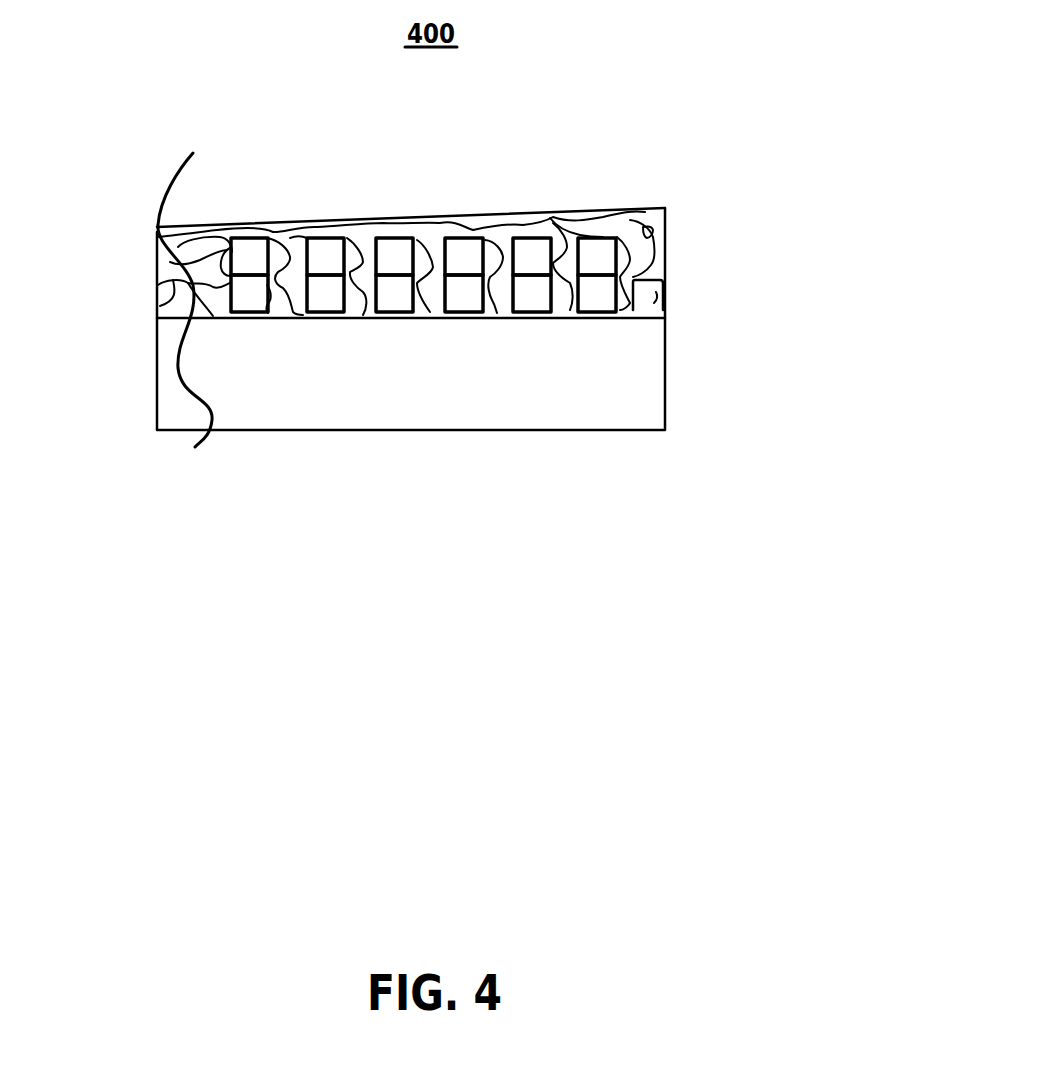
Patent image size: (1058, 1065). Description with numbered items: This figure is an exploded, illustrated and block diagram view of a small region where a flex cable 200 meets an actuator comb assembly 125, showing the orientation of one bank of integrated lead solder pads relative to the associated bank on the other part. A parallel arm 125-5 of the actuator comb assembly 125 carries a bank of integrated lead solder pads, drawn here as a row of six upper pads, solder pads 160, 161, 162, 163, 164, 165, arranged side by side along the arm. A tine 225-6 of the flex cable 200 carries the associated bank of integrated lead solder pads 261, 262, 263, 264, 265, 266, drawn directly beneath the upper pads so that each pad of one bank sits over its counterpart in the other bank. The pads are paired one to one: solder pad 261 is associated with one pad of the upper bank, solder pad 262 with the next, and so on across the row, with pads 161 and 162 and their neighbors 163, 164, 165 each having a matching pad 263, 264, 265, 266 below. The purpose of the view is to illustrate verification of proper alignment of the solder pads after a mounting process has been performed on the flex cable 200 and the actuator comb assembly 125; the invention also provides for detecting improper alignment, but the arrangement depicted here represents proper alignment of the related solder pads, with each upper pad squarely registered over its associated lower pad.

The actuator comb assembly 125 is at (162, 258).
The parallel arm 125-5 is at (647, 220).
The flex cable 200 is at (162, 308).
The tine 225-6 is at (657, 310).
The solder pad 160 is at (250, 250).
The solder pad 161 is at (325, 250).
The solder pad 162 is at (393, 250).
The solder pad 163 is at (462, 250).
The solder pad 164 is at (528, 250).
The solder pad 165 is at (595, 250).
The solder pad 261 is at (248, 295).
The solder pad 262 is at (325, 295).
The solder pad 263 is at (395, 295).
The solder pad 264 is at (465, 295).
The solder pad 265 is at (535, 295).
The solder pad 266 is at (600, 295).